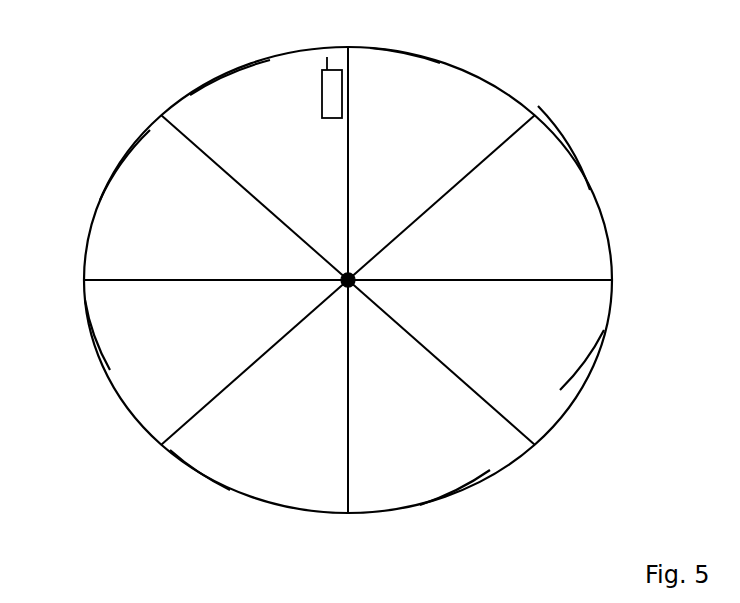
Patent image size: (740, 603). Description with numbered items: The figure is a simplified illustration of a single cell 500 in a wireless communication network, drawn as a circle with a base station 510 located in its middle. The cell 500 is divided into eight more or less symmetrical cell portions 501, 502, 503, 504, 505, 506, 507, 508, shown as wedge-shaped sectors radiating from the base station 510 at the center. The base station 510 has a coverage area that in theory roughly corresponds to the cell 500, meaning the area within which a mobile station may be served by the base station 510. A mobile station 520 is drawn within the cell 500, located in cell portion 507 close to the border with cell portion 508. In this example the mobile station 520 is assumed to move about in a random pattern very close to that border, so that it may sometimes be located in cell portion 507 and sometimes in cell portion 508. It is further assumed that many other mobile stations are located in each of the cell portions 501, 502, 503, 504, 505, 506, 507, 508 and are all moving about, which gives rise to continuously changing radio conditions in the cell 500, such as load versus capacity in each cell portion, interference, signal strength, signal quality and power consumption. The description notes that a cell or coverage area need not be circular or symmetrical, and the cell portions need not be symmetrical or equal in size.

The cell 500 is at (566, 86).
The cell portion 501 is at (553, 171).
The cell portion 502 is at (576, 341).
The cell portion 503 is at (435, 463).
The cell portion 504 is at (220, 455).
The cell portion 505 is at (118, 331).
The cell portion 506 is at (133, 172).
The cell portion 507 is at (240, 97).
The cell portion 508 is at (395, 67).
The base station 510 is at (340, 277).
The mobile station 520 is at (322, 90).